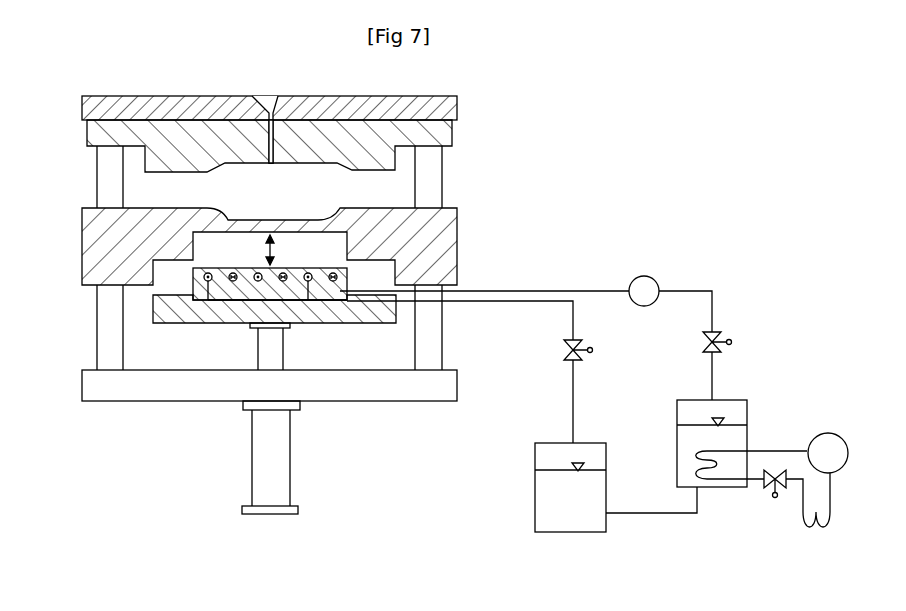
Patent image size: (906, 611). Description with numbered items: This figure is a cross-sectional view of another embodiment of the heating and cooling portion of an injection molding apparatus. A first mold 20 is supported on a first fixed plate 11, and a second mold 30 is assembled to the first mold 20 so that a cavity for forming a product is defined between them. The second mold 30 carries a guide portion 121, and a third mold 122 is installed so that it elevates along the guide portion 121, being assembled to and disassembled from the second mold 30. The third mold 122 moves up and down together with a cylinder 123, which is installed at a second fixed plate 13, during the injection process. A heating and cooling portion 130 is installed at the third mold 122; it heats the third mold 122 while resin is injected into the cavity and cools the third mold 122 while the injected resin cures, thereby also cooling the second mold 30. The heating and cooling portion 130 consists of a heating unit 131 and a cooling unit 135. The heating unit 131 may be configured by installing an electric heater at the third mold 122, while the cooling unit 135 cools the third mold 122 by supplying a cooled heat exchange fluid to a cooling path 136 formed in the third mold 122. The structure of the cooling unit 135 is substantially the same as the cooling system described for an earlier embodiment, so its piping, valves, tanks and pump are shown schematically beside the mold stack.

The first fixed plate 11 is at (448, 109).
The first mold 20 is at (372, 163).
The second mold 30 is at (445, 233).
The guide portion 121 is at (105, 173).
The third mold 122 is at (323, 313).
The cylinder 123 is at (262, 447).
The second fixed plate 13 is at (410, 387).
The heating and cooling portion 130 is at (752, 188).
The heating unit 131 is at (335, 273).
The cooling unit 135 is at (693, 258).
The cooling path 136 is at (383, 311).